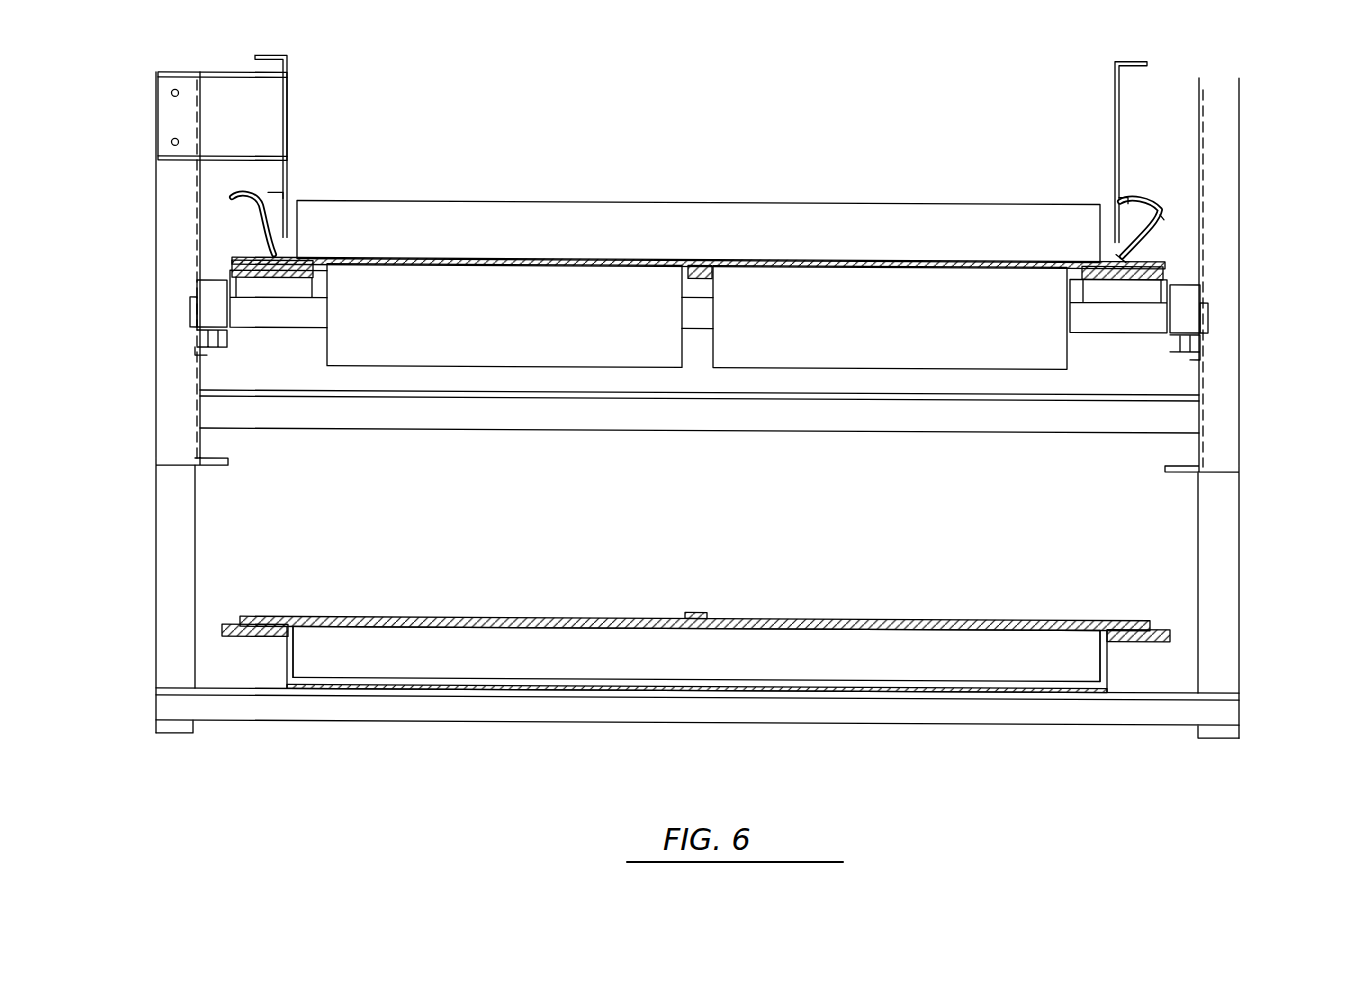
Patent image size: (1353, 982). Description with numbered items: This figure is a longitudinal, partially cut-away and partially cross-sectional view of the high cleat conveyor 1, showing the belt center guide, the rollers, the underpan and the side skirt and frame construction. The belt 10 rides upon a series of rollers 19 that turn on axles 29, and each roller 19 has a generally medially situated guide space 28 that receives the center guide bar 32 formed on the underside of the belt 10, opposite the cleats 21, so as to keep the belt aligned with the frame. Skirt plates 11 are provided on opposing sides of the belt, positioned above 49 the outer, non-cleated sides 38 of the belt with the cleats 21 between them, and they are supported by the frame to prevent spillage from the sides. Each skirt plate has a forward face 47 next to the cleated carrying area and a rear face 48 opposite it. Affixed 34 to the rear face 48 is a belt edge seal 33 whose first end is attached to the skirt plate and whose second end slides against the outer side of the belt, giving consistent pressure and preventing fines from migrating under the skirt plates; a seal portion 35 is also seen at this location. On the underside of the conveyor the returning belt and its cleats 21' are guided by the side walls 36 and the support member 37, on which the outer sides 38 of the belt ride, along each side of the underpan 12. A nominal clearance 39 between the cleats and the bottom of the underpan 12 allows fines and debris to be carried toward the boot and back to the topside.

The frame 1 is at (1222, 282).
The belt 10 is at (513, 260).
The skirt plates 11 is at (1115, 148).
The underpan 12 is at (1110, 688).
The rollers 19 is at (905, 296).
The cleats 21 is at (698, 192).
The cleats 21' is at (696, 718).
The guide space 28 is at (700, 292).
The axles 29 is at (1135, 315).
The center guide bar 32 is at (712, 276).
The belt edge seal 33 is at (1163, 225).
The affixment of edge seal 34 is at (1122, 195).
The clip foot 35 is at (1114, 250).
The side walls 36 is at (1110, 656).
The support member 37 is at (1170, 630).
The outer non-cleated sides of belt 38 is at (250, 253).
The nominal clearance 39 is at (377, 688).
The forward face 47 is at (288, 102).
The rear face 48 is at (283, 165).
The position above belt sides 49 is at (288, 233).